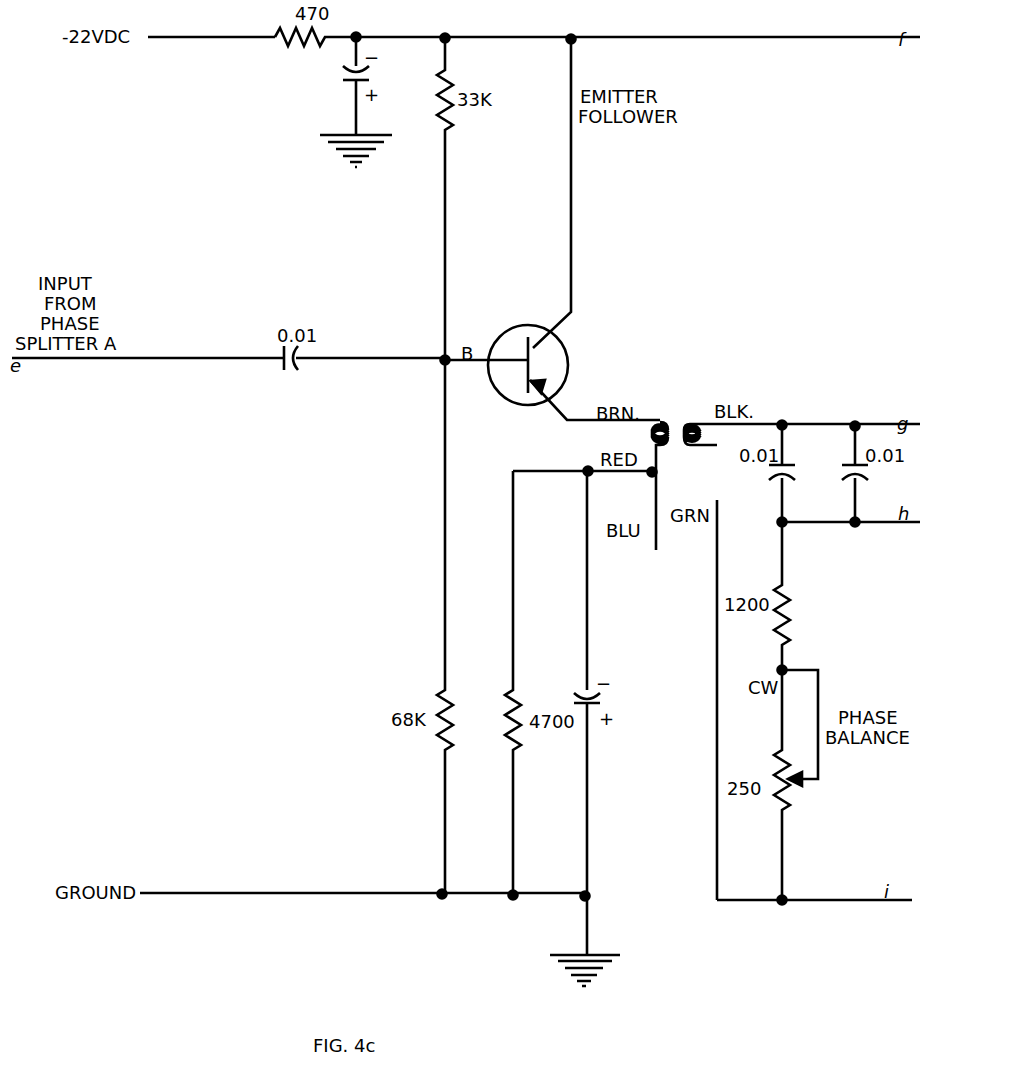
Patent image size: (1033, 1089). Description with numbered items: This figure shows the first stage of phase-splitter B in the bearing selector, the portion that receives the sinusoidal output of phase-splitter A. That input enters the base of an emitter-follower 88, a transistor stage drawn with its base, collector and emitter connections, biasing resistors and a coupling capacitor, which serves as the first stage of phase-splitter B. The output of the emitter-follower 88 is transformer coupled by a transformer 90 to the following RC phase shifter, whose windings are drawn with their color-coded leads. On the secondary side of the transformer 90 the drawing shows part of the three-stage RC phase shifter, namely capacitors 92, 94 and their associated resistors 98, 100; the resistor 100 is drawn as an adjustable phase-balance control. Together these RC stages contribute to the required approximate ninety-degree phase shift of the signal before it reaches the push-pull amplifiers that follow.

The emitter-follower 88 is at (496, 389).
The transformer 90 is at (668, 426).
The capacitor 92 is at (765, 472).
The capacitor 94 is at (851, 462).
The resistor 98 is at (790, 620).
The resistor 100 is at (790, 806).